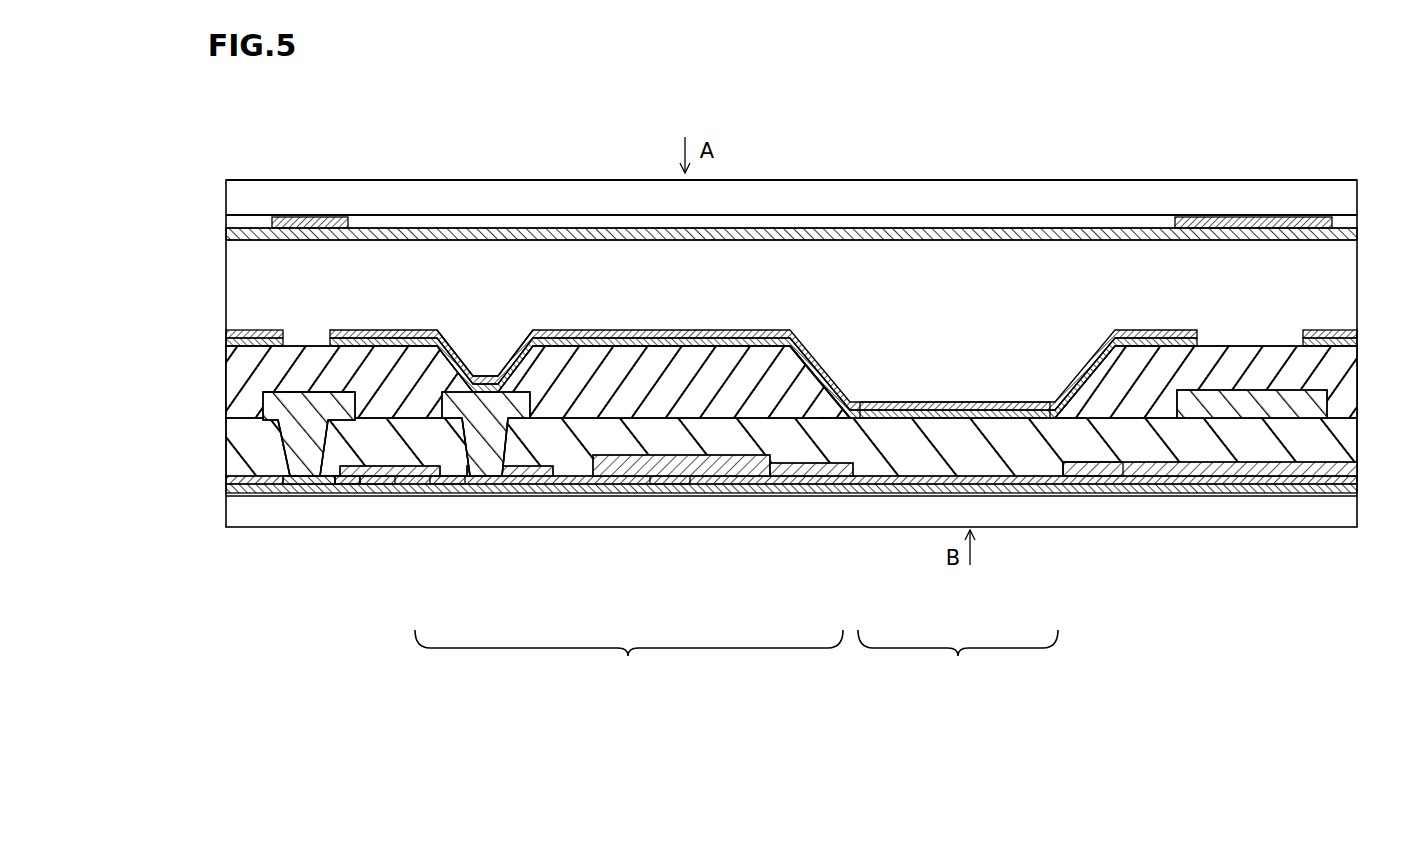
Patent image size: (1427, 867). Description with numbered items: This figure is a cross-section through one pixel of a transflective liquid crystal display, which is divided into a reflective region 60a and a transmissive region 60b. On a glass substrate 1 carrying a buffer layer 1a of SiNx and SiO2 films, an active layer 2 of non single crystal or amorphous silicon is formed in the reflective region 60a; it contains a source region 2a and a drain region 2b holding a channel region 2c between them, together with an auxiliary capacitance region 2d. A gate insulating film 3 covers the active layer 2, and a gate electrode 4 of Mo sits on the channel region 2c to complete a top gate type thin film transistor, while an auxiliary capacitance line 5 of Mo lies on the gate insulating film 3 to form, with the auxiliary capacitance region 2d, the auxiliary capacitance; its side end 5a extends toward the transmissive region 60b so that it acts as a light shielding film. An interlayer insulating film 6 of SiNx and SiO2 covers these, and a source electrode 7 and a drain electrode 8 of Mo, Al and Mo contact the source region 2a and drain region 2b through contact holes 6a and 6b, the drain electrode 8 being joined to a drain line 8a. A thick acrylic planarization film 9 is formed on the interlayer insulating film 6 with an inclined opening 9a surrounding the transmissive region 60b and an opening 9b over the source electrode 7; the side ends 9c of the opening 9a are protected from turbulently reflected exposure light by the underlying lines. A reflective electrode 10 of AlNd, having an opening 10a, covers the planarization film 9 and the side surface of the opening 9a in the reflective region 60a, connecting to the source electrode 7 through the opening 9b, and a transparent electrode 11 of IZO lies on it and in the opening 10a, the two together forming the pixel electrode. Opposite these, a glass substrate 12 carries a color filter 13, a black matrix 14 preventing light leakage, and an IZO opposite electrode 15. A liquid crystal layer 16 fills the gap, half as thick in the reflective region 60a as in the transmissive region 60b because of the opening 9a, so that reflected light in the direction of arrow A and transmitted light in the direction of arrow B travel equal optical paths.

The glass substrate 1 is at (240, 523).
The buffer layer 1a is at (270, 490).
The active layer 2 is at (292, 484).
The source region 2a is at (445, 484).
The drain region 2b is at (345, 484).
The channel region 2c is at (378, 484).
The auxiliary capacitance region 2d is at (668, 484).
The gate insulating film 3 is at (260, 480).
The gate electrode 4 is at (262, 393).
The auxiliary capacitance line 5 is at (620, 466).
The side end of the auxiliary capacitance line 5a is at (830, 470).
The interlayer insulating film 6 is at (250, 462).
The contact hole 6a is at (487, 450).
The contact hole 6b is at (283, 432).
The source electrode 7 is at (516, 440).
The drain electrode 8 is at (268, 402).
The drain line 8a is at (1262, 405).
The planarization film 9 is at (250, 360).
The opening 9a is at (838, 400).
The opening 9b is at (480, 372).
The side end 9c is at (800, 478).
The reflective electrode 10 is at (232, 343).
The opening 10a is at (892, 420).
The transparent electrode 11 is at (232, 334).
The glass substrate 12 is at (233, 197).
The color filter 13 is at (612, 224).
The black matrix 14 is at (298, 217).
The opposite electrode 15 is at (233, 235).
The liquid crystal layer 16 is at (233, 268).
The reflective region 60a is at (629, 661).
The transmissive region 60b is at (958, 661).